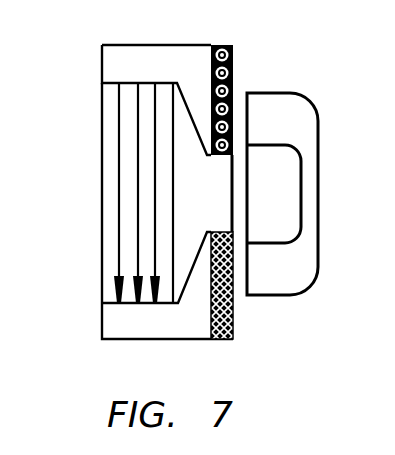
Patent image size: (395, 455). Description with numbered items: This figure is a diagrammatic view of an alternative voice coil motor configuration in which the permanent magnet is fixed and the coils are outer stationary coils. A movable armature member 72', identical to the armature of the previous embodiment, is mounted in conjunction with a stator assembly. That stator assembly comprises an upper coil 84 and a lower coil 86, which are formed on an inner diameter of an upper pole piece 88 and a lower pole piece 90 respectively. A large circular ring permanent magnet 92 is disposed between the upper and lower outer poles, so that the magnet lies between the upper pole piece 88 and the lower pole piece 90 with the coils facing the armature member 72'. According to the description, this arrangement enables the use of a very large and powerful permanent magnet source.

The movable armature member 72' is at (313, 194).
The upper coil 84 is at (233, 63).
The lower coil 86 is at (233, 312).
The upper pole piece 88 is at (163, 45).
The lower pole piece 90 is at (123, 325).
The circular ring permanent magnet 92 is at (110, 190).